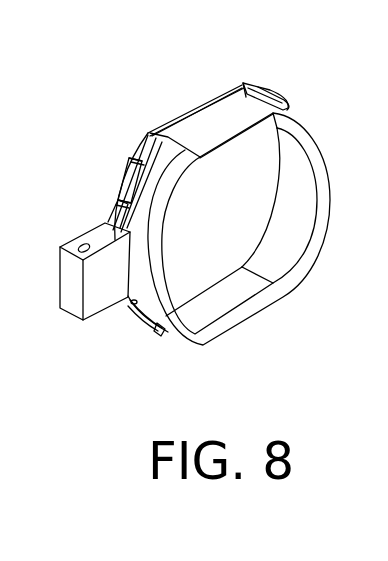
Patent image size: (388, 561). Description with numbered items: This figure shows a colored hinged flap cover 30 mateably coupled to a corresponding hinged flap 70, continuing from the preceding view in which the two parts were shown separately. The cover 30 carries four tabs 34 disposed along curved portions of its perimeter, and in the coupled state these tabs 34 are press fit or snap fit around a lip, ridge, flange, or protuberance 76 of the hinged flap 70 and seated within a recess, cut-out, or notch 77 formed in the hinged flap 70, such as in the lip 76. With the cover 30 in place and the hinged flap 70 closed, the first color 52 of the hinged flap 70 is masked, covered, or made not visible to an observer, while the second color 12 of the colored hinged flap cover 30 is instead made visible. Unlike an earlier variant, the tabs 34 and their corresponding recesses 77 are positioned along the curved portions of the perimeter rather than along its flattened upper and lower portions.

The second color 12 is at (224, 92).
The colored hinged flap cover 30 is at (168, 118).
The tabs 34 is at (292, 104).
The first color 52 is at (243, 83).
The hinged flap 70 is at (241, 243).
The lip 76 is at (117, 213).
The recess 77 is at (133, 196).